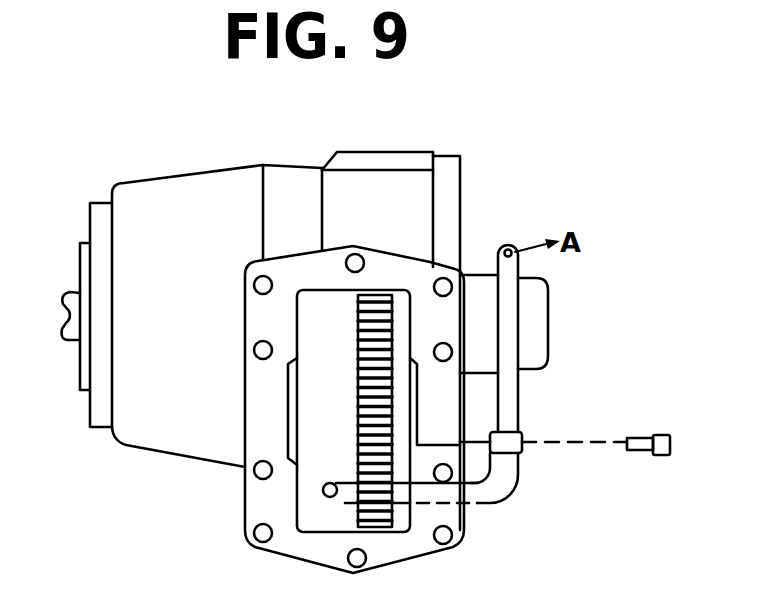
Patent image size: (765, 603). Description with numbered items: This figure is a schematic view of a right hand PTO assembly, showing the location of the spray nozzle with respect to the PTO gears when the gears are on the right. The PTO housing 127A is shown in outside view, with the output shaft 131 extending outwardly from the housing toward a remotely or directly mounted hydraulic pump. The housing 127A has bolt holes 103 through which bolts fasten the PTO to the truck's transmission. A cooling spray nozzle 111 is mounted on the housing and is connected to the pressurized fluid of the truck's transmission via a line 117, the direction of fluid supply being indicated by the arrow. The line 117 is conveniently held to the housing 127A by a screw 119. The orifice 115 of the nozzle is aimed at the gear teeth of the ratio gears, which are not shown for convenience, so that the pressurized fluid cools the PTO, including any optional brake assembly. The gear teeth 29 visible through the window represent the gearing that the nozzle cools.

The housing 127A is at (229, 233).
The output shaft 131 is at (74, 300).
The bolt holes 103 is at (440, 278).
The gear rack 29 is at (383, 368).
The nozzle 111 is at (330, 482).
The orifice 115 is at (323, 490).
The line 117 is at (507, 393).
The screw 119 is at (640, 435).